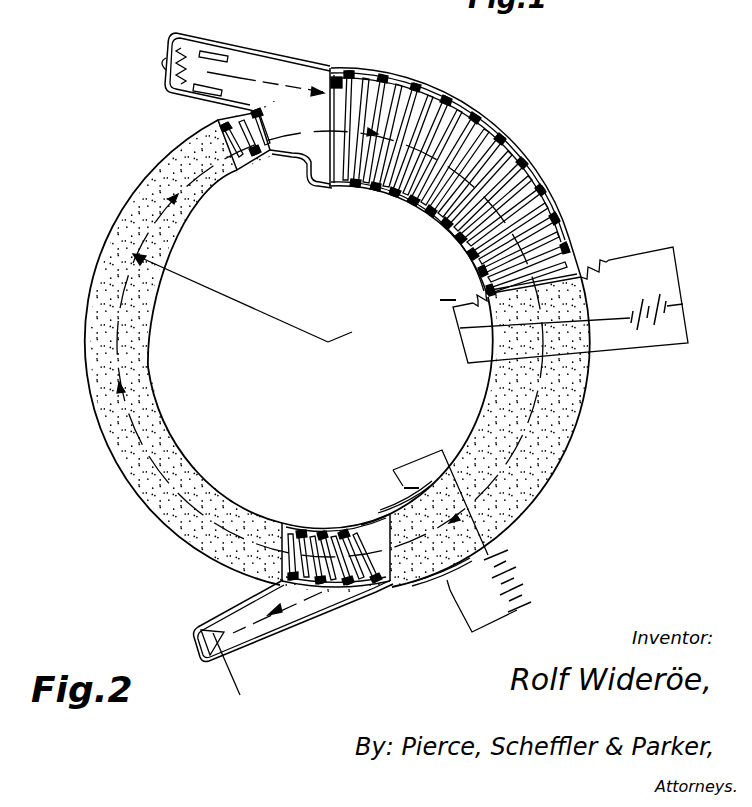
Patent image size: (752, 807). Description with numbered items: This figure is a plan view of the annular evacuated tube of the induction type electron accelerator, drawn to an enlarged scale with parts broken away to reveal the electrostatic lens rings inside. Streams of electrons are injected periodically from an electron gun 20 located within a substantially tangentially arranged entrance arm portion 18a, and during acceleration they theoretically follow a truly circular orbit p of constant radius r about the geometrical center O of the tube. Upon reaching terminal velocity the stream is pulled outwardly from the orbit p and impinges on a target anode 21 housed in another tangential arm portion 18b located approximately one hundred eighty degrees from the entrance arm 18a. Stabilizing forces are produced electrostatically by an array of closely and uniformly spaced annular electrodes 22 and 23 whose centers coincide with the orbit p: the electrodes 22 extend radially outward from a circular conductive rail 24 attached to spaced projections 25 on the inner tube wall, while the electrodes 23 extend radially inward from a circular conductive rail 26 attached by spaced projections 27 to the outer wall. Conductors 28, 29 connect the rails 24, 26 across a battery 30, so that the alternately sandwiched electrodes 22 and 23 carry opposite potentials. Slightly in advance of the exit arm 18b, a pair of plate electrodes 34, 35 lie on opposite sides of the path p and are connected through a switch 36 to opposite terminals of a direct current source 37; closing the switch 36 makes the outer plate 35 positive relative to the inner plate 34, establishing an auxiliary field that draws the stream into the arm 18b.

The arm portion 18a is at (217, 40).
The arm portion 18b is at (263, 638).
The electron gun 20 is at (192, 67).
The target anode 21 is at (200, 622).
The annular electrodes 22 is at (272, 152).
The annular electrodes 23 is at (434, 335).
The circular conductive rail 24 is at (416, 208).
The spaced projections 25 is at (473, 241).
The circular conductive rail 26 is at (476, 112).
The spaced projections 27 is at (543, 176).
The conductor 28 is at (629, 257).
The conductor 29 is at (437, 303).
The battery 30 is at (657, 300).
The plate electrode 34 is at (393, 472).
The plate electrode 35 is at (436, 580).
The switch 36 is at (461, 600).
The direct current source 37 is at (519, 573).
The acceleration orbit p is at (220, 125).
The radius r is at (230, 298).
The geometrical center O is at (347, 333).